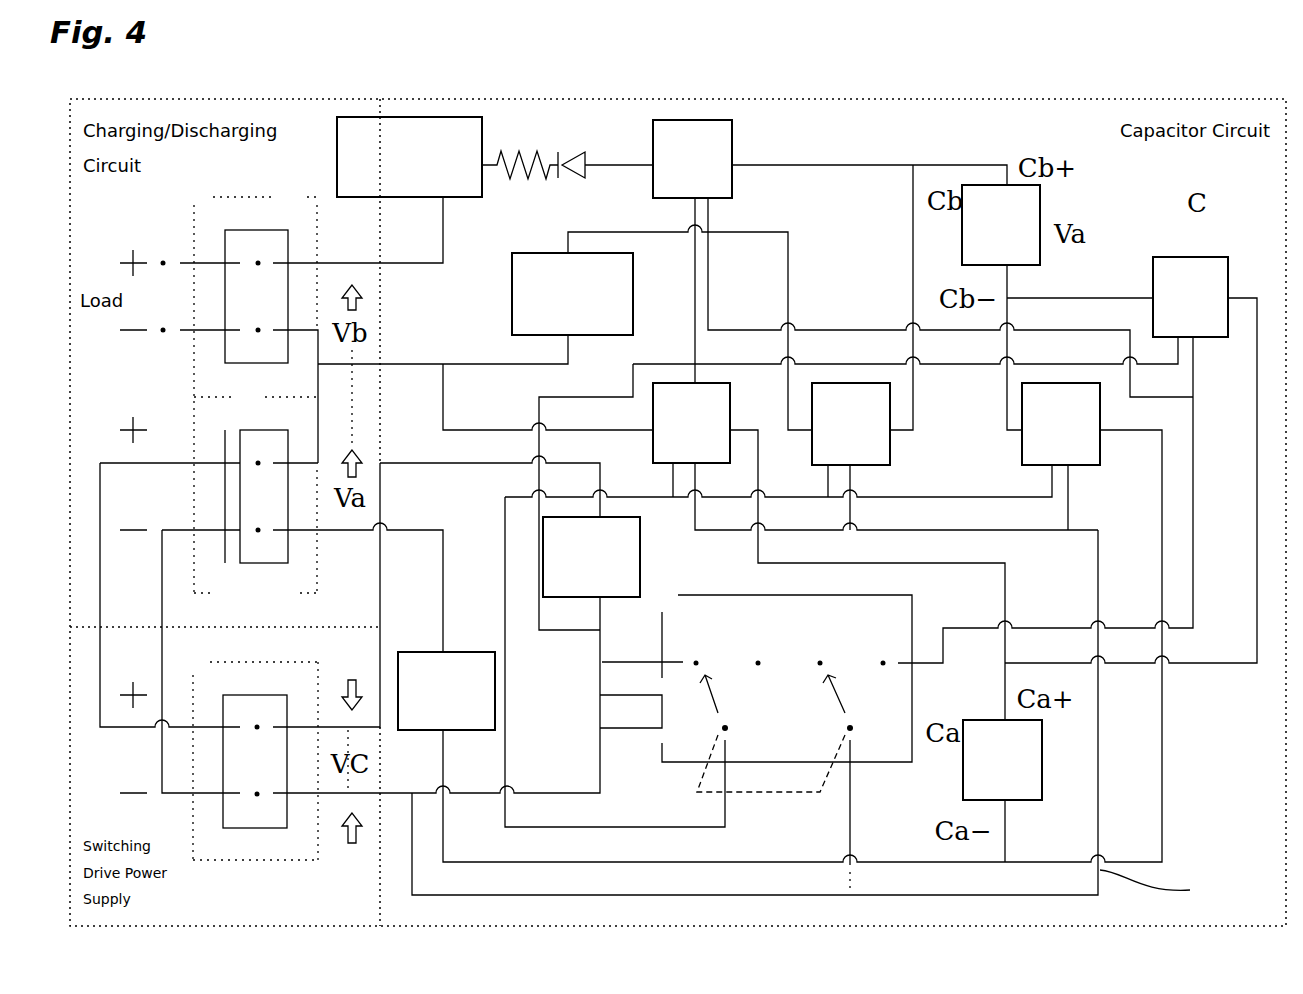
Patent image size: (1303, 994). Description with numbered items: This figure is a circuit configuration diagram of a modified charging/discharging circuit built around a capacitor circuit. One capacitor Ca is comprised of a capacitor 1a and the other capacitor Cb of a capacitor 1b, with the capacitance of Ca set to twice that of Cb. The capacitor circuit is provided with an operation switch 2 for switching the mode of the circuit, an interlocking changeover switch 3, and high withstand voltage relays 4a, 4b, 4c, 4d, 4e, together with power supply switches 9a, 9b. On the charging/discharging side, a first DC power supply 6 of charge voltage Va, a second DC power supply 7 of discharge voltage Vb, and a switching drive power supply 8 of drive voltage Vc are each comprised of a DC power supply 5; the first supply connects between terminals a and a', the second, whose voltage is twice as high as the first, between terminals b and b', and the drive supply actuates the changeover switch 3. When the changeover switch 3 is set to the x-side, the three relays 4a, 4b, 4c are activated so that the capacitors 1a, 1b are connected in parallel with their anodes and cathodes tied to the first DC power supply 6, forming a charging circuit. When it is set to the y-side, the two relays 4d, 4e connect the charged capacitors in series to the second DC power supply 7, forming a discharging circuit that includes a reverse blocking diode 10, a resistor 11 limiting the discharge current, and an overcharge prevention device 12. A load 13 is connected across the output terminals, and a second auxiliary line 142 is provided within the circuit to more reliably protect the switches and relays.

The capacitor 1a is at (1002, 760).
The capacitor 1b is at (1001, 225).
The operation switch 2 is at (572, 294).
The interlocking changeover switch 3 is at (757, 688).
The relay 4a is at (691, 423).
The relay 4b is at (851, 424).
The relay 4c is at (1061, 424).
The relay 4d is at (1190, 297).
The relay 4e is at (830, 159).
The DC power supply 5 is at (255, 529).
The first DC power supply 6 is at (178, 473).
The second DC power supply 7 is at (253, 398).
The switching drive power supply 8 is at (219, 755).
The power supply switch 9a is at (446, 691).
The power supply switch 9b is at (591, 557).
The reverse blocking diode 10 is at (604, 148).
The resistor 11 is at (520, 149).
The overcharge prevention device 12 is at (409, 157).
The load 13 is at (152, 298).
The second auxiliary line 142 is at (1171, 886).